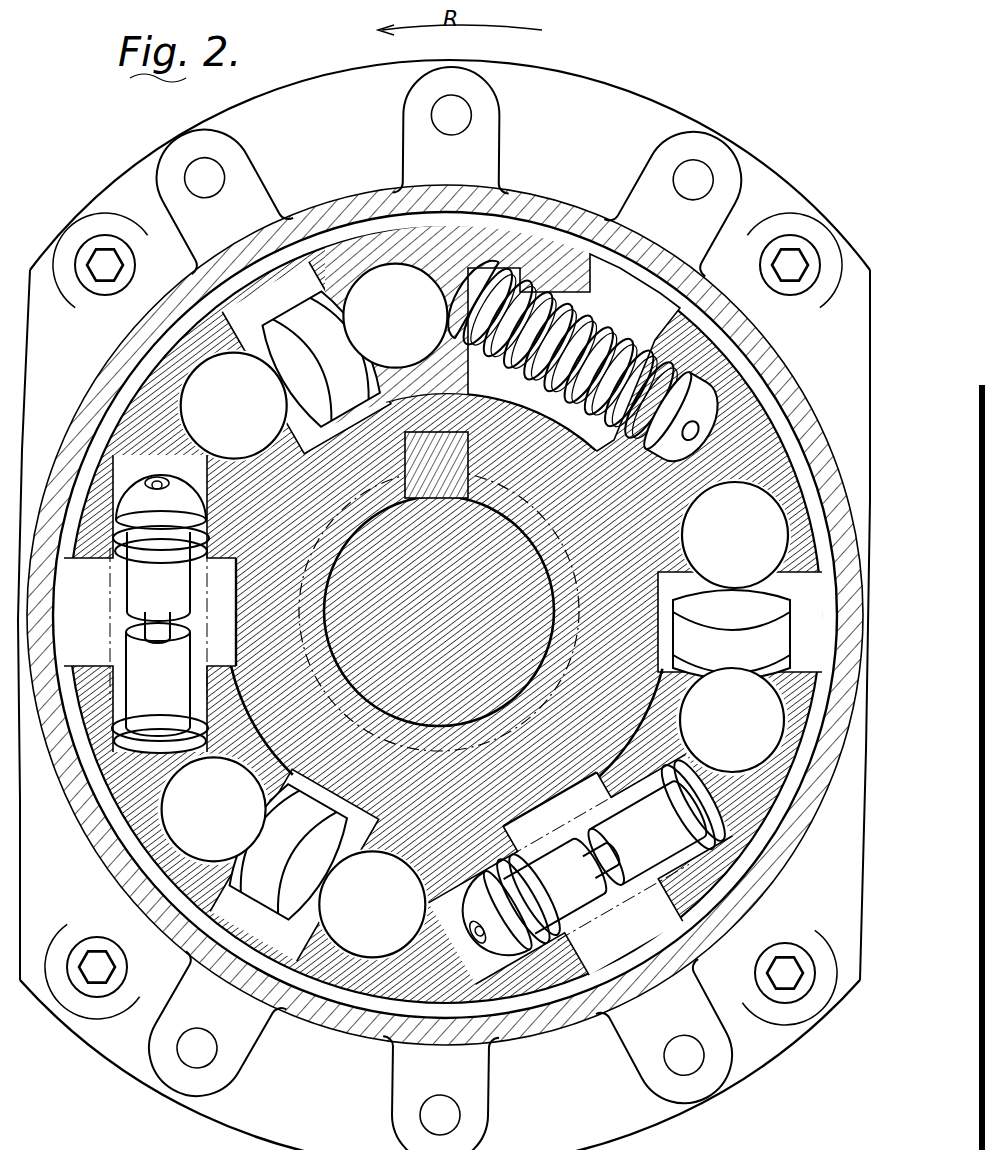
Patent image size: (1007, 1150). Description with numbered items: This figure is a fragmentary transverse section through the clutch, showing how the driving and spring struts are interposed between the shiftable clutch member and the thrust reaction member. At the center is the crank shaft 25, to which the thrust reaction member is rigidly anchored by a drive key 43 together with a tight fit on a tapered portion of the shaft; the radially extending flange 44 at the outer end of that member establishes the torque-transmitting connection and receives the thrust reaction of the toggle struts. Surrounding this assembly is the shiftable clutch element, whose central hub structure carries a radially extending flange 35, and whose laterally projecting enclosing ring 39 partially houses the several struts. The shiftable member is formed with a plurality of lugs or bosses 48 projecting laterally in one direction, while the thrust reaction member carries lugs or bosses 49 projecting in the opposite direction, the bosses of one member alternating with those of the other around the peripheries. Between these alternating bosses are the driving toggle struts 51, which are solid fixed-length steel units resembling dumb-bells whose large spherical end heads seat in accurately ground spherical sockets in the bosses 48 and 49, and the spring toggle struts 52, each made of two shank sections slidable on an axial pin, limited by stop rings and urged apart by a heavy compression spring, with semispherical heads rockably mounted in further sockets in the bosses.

The radially extending flange 35 is at (666, 126).
The enclosing ring 39 is at (232, 258).
The radially extending flange 44 is at (635, 603).
The crank shaft 25 is at (523, 578).
The drive key 43 is at (455, 455).
The lugs or bosses 48 is at (447, 296).
The lugs or bosses 49 is at (225, 483).
The driving toggle struts 51 is at (294, 308).
The spring toggle struts 52 is at (621, 326).